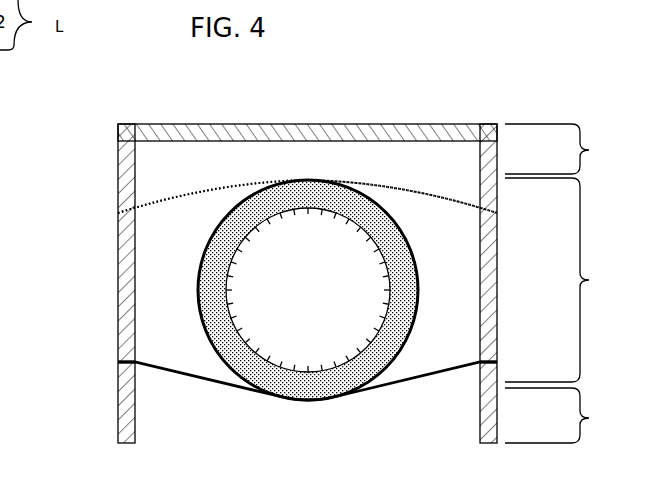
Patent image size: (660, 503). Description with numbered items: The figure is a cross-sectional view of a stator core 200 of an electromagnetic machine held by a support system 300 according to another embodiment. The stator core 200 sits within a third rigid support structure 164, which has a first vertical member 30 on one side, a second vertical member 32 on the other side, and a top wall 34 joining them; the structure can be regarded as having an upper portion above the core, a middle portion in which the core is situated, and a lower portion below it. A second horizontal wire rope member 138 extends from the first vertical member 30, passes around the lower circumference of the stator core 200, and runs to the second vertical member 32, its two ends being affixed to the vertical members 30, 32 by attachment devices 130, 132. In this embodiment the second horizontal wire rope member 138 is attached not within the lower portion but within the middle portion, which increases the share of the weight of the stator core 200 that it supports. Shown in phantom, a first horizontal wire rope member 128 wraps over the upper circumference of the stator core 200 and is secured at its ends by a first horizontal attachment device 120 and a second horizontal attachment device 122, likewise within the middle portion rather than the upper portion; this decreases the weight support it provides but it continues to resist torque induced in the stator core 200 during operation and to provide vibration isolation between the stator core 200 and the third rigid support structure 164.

The suspension system 300 is at (452, 98).
The top wall 34 is at (378, 124).
The first vertical member 30 is at (118, 248).
The second vertical member 32 is at (497, 320).
The first horizontal attachment device 120 is at (118, 210).
The first horizontal wire rope member 128 is at (180, 198).
The second horizontal attachment device 122 is at (497, 211).
The second horizontal wire rope member 138 is at (434, 378).
The attachment device 130 is at (118, 361).
The attachment device 132 is at (497, 363).
The stator core 200 is at (308, 290).
The third rigid support structure 164 is at (510, 111).